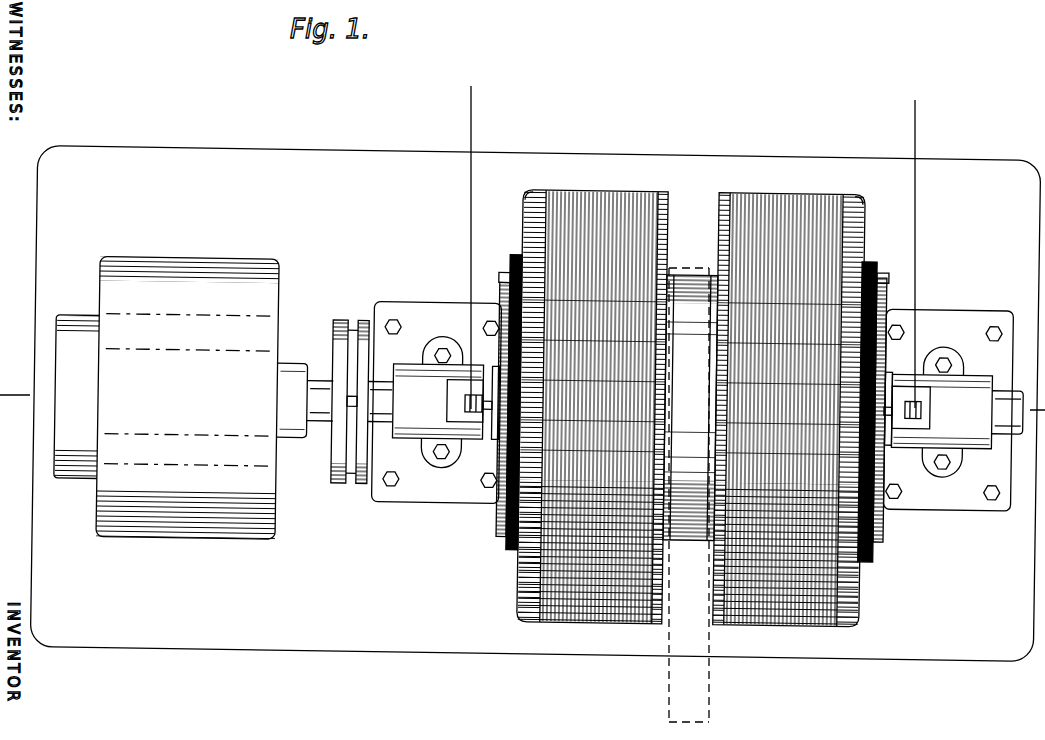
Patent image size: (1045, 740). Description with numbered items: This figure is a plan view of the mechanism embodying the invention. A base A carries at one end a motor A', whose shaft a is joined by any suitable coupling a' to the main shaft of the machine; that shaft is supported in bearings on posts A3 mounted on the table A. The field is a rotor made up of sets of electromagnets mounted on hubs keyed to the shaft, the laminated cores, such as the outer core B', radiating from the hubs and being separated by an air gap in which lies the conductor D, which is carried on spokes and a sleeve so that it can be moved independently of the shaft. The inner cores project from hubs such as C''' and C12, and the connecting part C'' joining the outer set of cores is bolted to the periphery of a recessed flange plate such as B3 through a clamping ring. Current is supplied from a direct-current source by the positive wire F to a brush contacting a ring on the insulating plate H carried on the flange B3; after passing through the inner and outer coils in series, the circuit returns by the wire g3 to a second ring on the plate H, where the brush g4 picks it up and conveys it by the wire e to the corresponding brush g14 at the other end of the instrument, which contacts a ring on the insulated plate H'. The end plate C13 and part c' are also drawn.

The base A is at (535, 404).
The motor A' is at (181, 398).
The posts A3 is at (404, 368).
The shaft a is at (346, 372).
The coupling a' is at (350, 384).
The core B' is at (808, 400).
The recessed flange B3 is at (862, 207).
The connecting part C'' is at (579, 395).
The hub C''' is at (493, 398).
The hub C12 is at (492, 412).
The coil end plate C13 is at (523, 197).
The brush block c' is at (888, 401).
The conductor D is at (676, 290).
The wire e is at (471, 303).
The wire F is at (669, 677).
The wire g3 is at (886, 412).
The brush g4 is at (906, 394).
The brush g14 is at (478, 394).
The insulating plate H is at (875, 398).
The insulated plate H' is at (505, 388).